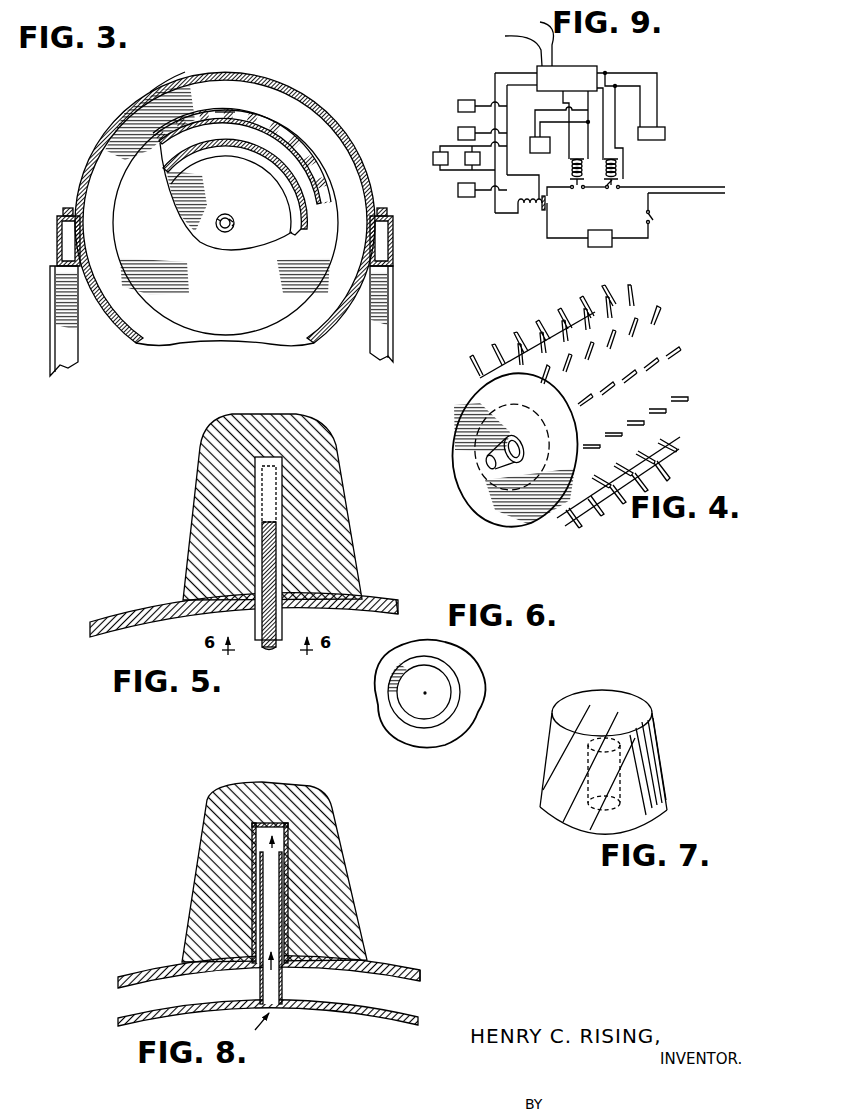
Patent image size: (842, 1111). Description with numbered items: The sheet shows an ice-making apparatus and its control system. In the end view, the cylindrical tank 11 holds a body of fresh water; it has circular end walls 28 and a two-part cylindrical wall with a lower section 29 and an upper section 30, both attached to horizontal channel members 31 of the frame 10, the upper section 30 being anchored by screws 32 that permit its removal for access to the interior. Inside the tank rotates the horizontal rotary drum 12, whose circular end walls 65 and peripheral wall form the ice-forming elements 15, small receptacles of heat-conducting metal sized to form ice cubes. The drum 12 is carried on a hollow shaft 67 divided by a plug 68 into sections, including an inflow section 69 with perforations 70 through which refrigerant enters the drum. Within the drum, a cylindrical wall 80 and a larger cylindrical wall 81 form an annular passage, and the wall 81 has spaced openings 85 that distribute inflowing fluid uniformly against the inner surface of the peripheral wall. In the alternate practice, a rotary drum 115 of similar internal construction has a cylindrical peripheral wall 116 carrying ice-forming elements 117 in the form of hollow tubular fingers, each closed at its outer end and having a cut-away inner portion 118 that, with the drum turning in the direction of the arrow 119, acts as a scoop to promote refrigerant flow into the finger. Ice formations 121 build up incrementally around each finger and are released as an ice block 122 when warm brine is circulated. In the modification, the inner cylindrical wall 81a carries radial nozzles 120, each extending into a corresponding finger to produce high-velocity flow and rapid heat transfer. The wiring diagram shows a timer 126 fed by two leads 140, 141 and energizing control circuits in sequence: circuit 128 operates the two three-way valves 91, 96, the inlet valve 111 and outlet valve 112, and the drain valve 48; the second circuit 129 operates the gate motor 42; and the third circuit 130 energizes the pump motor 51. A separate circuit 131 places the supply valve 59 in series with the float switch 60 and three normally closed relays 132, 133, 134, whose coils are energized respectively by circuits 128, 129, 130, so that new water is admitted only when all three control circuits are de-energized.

In FIG. 3, the frame 10 is at (49, 322).
In FIG. 3, the cylindrical tank 11 is at (119, 113).
In FIG. 3, the rotary drum 12 is at (222, 100).
In FIG. 3, the ice-forming elements 15 is at (256, 118).
In FIG. 3, the circular end walls 28 is at (108, 156).
In FIG. 3, the lower section 29 is at (132, 345).
In FIG. 3, the upper section 30 is at (176, 80).
In FIG. 3, the horizontal channel members 31 is at (57, 246).
In FIG. 3, the screws 32 is at (67, 208).
In FIG. 3, the circular end walls 65 is at (225, 277).
In FIG. 3, the shaft 67 is at (237, 224).
In FIG. 3, the plug 68 is at (234, 224).
In FIG. 3, the inflow section 69 is at (218, 219).
In FIG. 3, the perforations 70 is at (219, 229).
In FIG. 3, the cylindrical wall 80 is at (295, 232).
In FIG. 3, the cylindrical wall 81 is at (195, 155).
In FIG. 3, the spaced openings 85 is at (264, 151).
In FIG. 9, the motor 42 is at (540, 153).
In FIG. 9, the drain valve 48 is at (464, 197).
In FIG. 9, the motor 51 is at (650, 140).
In FIG. 9, the supply valve 59 is at (605, 248).
In FIG. 9, the float switch 60 is at (654, 218).
In FIG. 9, the 3-way valve 91 is at (466, 100).
In FIG. 9, the 3-way valve 96 is at (462, 127).
In FIG. 9, the inlet valve 111 is at (433, 158).
In FIG. 9, the outlet valve 112 is at (467, 165).
In FIG. 9, the timer 126 is at (593, 68).
In FIG. 9, the circuit 128 is at (520, 72).
In FIG. 9, the second circuit 129 is at (563, 101).
In FIG. 9, the third control circuit 130 is at (634, 86).
In FIG. 9, the circuit 131 is at (716, 187).
In FIG. 9, the relay 132 is at (548, 205).
In FIG. 9, the relay 133 is at (577, 188).
In FIG. 9, the relay 134 is at (620, 190).
In FIG. 9, the lead 140 is at (506, 47).
In FIG. 9, the lead 141 is at (533, 39).
In FIG. 4, the rotary drum 115 is at (450, 424).
In FIG. 5, the rotary drum 115 is at (398, 605).
In FIG. 8, the rotary drum 115 is at (425, 972).
In FIG. 4, the cylindrical peripheral wall 116 is at (655, 345).
In FIG. 5, the cylindrical peripheral wall 116 is at (172, 603).
In FIG. 6, the cylindrical peripheral wall 116 is at (476, 678).
In FIG. 8, the cylindrical peripheral wall 116 is at (385, 968).
In FIG. 4, the ice-forming elements 117 is at (512, 353).
In FIG. 5, the ice-forming elements 117 is at (284, 553).
In FIG. 6, the ice-forming elements 117 is at (398, 708).
In FIG. 8, the ice-forming elements 117 is at (290, 838).
In FIG. 5, the portion 118 is at (272, 650).
In FIG. 6, the portion 118 is at (423, 730).
In FIG. 5, the arrow 119 is at (240, 623).
In FIG. 8, the radial nozzles 120 is at (283, 912).
In FIG. 5, the ice formations 121 is at (348, 548).
In FIG. 7, the ice formations 121 is at (553, 765).
In FIG. 8, the ice formations 121 is at (340, 865).
In FIG. 7, the ice block 122 is at (670, 752).
In FIG. 8, the cylindrical wall 81a is at (412, 1018).